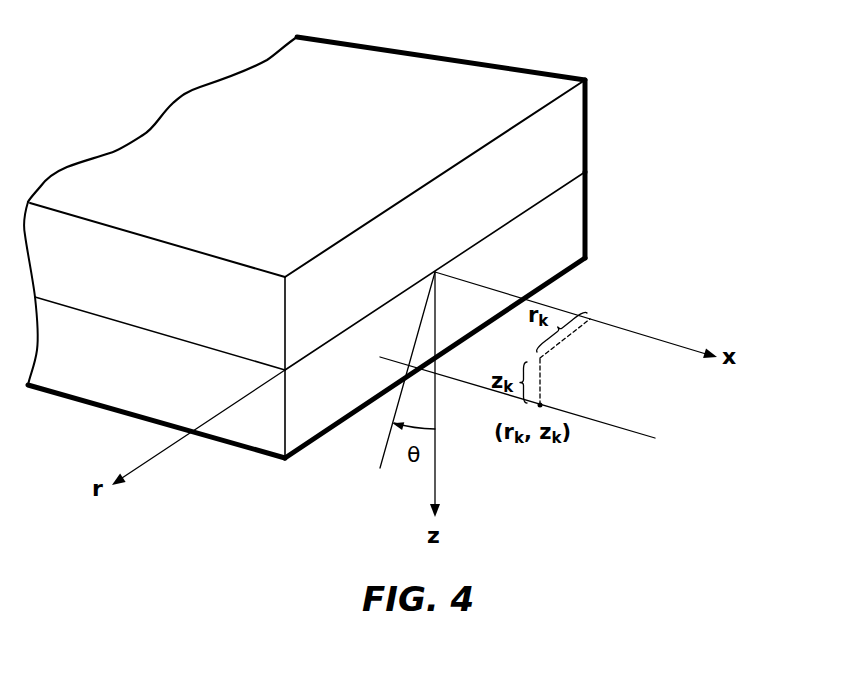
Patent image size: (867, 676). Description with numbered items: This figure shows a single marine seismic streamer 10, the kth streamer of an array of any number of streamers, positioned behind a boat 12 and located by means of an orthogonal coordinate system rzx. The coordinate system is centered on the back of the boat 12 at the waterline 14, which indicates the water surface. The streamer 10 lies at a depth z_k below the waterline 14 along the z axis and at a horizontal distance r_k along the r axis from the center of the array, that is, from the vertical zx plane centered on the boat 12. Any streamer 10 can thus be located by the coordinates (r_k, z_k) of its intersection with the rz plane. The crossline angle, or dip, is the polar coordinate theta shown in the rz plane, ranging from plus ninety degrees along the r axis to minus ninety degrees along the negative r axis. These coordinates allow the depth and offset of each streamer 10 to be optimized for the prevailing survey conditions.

The marine seismic streamer 10 is at (625, 432).
The boat 12 is at (573, 118).
The waterline 14 is at (585, 172).